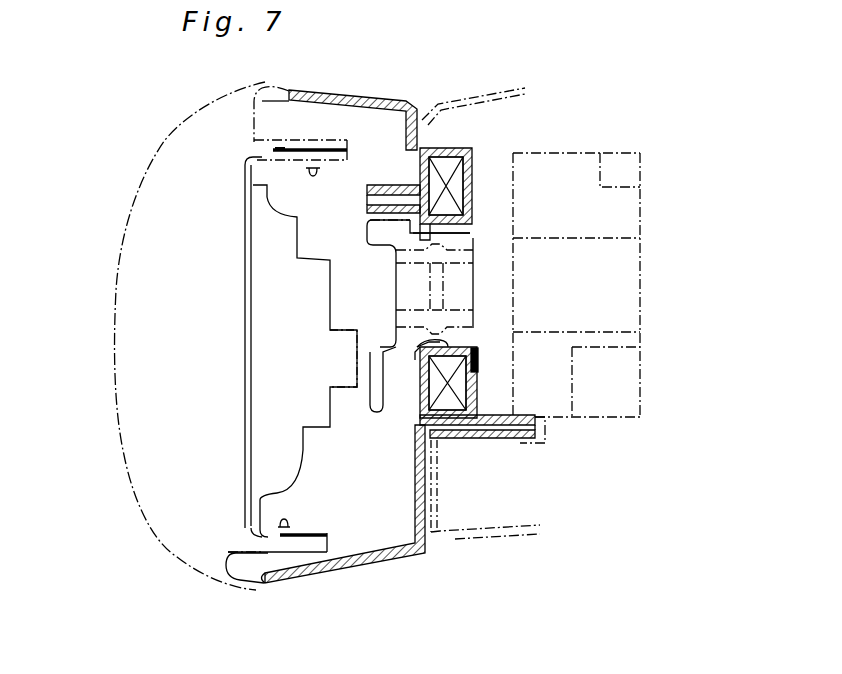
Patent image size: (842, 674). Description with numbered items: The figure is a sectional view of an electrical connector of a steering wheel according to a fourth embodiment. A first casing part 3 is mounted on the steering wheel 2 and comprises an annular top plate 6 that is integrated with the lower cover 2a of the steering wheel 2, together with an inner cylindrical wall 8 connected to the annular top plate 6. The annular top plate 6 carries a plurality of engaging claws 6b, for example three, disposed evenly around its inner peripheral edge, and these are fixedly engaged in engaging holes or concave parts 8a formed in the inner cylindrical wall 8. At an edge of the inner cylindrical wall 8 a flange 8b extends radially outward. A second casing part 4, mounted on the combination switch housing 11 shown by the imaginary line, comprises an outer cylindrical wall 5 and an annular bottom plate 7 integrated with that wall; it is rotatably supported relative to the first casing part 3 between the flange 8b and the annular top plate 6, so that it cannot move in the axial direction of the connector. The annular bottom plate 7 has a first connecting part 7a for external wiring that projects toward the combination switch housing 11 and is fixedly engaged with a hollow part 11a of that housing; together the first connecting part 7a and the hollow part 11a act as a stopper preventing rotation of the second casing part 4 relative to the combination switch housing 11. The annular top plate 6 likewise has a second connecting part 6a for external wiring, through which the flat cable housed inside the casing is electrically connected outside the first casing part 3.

The steering wheel 2 is at (120, 200).
The lower cover 2a is at (320, 574).
The first casing part 3 is at (398, 483).
The second casing part 4 is at (514, 155).
The outer cylindrical wall 5 is at (450, 152).
The annular top plate 6 is at (421, 410).
The second connecting part 6a is at (385, 183).
The engaging claws 6b is at (421, 352).
The annular bottom plate 7 is at (470, 177).
The first connecting part 7a is at (499, 439).
The inner cylindrical wall 8 is at (422, 400).
The engaging holes or concave parts 8a is at (417, 347).
The flange 8b is at (468, 348).
The combination switch housing 11 is at (600, 418).
The hollow part 11a is at (543, 440).